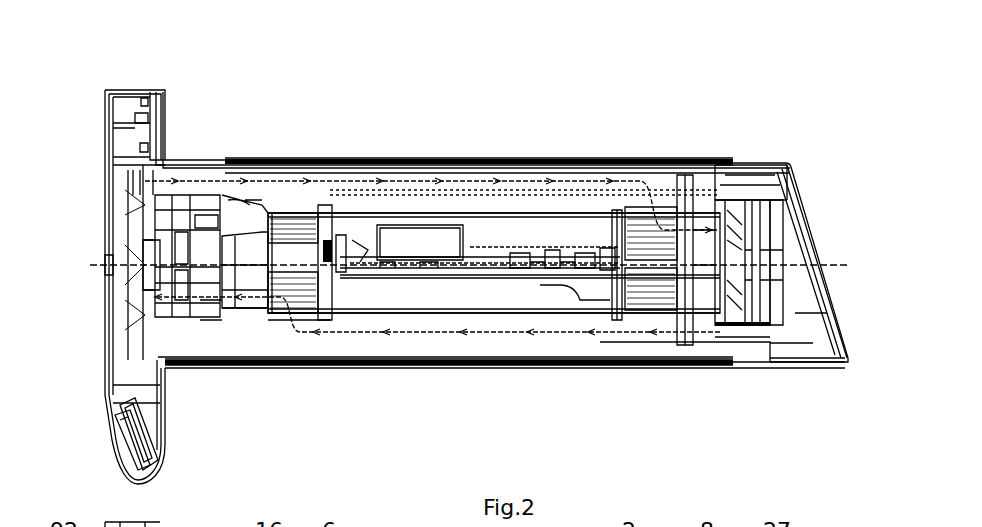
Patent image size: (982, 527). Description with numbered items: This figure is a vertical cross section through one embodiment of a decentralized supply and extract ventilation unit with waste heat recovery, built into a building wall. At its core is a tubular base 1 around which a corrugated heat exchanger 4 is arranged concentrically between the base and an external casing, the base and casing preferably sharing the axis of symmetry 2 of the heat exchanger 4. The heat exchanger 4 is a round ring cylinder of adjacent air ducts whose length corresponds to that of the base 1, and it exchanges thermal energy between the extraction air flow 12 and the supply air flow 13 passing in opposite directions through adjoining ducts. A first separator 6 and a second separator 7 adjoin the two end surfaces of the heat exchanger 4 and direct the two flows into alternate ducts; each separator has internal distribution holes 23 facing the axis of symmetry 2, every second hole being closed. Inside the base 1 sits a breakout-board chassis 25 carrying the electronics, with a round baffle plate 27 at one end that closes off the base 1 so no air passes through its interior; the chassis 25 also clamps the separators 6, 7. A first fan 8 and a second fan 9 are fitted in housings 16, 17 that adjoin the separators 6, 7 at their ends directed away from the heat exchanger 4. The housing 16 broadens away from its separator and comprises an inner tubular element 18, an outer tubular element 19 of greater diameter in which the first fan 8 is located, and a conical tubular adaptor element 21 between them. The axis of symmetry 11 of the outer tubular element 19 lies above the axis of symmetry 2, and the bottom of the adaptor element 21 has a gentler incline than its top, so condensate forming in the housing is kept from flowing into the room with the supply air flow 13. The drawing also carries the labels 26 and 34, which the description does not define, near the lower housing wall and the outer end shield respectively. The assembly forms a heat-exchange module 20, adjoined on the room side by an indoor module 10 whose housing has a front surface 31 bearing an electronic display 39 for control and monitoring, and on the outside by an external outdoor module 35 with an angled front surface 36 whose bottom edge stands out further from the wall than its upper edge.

The base 1 is at (481, 215).
The axis of symmetry 2 is at (548, 268).
The corrugated heat exchanger 4 is at (434, 337).
The first separator 6 is at (290, 298).
The second separator 7 is at (652, 300).
The first fan 8 is at (200, 318).
The second fan 9 is at (735, 310).
The indoor module 10 is at (105, 90).
The axis of symmetry of the outer tubular element 11 is at (152, 258).
The extraction air flow 12 is at (428, 172).
The supply air flow 13 is at (343, 325).
The housing of the first fan 16 is at (230, 193).
The housing of the second fan 17 is at (712, 203).
The inner tubular element 18 is at (248, 300).
The outer tubular element 19 is at (204, 322).
The heat-exchange module 20 is at (792, 362).
The tubular adaptor element 21 is at (231, 325).
The internal distribution holes 23 is at (290, 222).
The breakout-board chassis 25 is at (393, 262).
The housing bottom wall 26 is at (484, 355).
The round baffle plate 27 is at (376, 185).
The front surface 31 is at (107, 265).
The end shield 34 is at (690, 352).
The external outdoor module 35 is at (848, 362).
The angled front surface 36 is at (817, 250).
The electronic display 39 is at (115, 440).